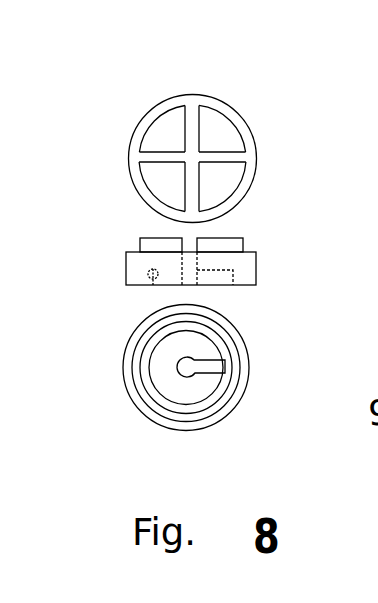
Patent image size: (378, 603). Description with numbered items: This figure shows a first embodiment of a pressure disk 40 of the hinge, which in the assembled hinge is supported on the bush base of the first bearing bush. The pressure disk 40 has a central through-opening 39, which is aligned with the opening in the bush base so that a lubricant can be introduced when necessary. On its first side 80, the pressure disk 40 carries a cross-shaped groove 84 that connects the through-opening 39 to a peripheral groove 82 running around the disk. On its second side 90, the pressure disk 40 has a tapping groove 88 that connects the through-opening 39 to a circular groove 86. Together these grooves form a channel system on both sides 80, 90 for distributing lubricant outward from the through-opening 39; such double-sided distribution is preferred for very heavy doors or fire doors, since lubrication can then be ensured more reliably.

The pressure disk 40 is at (135, 55).
The through-opening 39 is at (190, 156).
The first side 80 is at (125, 127).
The peripheral groove 82 is at (233, 122).
The cross-shaped groove 84 is at (184, 221).
The circular groove 86 is at (155, 280).
The tapping groove 88 is at (227, 377).
The second side 90 is at (126, 292).